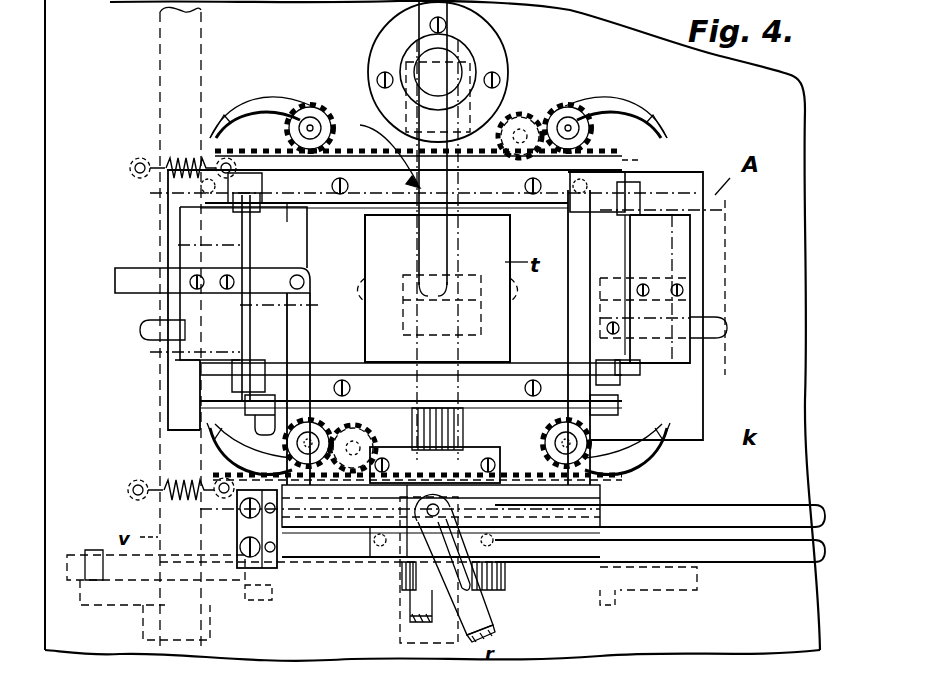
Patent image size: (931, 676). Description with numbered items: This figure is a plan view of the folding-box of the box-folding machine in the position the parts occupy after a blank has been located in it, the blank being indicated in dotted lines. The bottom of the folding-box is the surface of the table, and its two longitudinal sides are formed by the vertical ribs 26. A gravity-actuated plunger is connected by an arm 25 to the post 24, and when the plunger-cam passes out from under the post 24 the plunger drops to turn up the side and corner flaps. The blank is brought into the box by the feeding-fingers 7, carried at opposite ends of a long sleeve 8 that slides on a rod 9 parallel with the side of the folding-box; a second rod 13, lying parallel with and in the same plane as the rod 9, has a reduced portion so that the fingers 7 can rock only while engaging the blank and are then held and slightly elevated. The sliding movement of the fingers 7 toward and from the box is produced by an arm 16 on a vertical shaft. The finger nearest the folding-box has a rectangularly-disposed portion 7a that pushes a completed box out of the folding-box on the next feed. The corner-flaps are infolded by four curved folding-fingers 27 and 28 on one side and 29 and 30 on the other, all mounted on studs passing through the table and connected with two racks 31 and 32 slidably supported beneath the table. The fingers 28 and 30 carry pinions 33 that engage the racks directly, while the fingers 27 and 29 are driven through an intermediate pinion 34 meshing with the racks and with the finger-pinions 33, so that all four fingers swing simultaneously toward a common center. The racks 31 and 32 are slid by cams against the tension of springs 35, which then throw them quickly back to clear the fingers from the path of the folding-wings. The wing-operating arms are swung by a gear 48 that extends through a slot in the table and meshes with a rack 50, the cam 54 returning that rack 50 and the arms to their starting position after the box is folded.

The feeding-fingers 7 is at (310, 350).
The rectangularly-disposed portion of feeding-finger 7a is at (128, 290).
The sleeve 8 is at (573, 530).
The rod 9 is at (760, 490).
The second rod 13 is at (742, 565).
The arm 16 is at (498, 630).
The post 24 is at (465, 80).
The arm 25 is at (380, 144).
The vertical ribs 26 is at (540, 212).
The curved folding-finger 27 is at (215, 458).
The curved folding-finger 28 is at (652, 475).
The curved folding-finger 29 is at (620, 95).
The curved folding-finger 30 is at (262, 95).
The rack 31 is at (622, 490).
The rack 32 is at (630, 160).
The pinions 33 is at (318, 110).
The intermediate pinion 34 is at (528, 118).
The springs 35 is at (178, 187).
The gear 48 is at (401, 578).
The rack 50 is at (682, 595).
The cam 54 is at (112, 610).